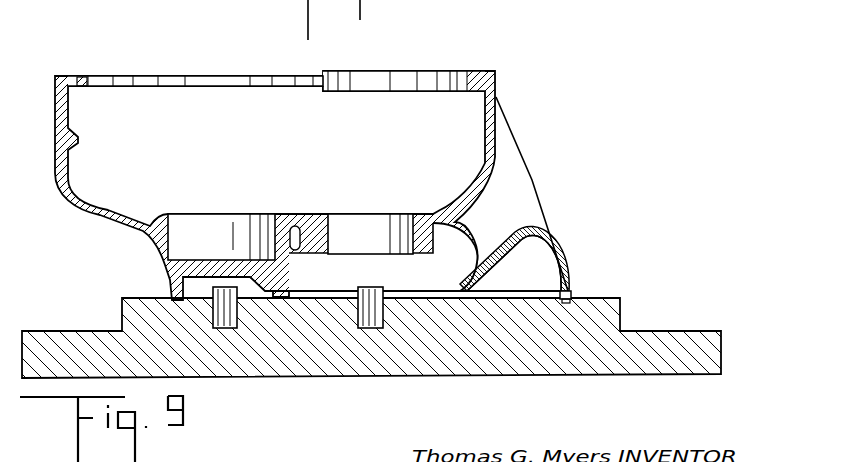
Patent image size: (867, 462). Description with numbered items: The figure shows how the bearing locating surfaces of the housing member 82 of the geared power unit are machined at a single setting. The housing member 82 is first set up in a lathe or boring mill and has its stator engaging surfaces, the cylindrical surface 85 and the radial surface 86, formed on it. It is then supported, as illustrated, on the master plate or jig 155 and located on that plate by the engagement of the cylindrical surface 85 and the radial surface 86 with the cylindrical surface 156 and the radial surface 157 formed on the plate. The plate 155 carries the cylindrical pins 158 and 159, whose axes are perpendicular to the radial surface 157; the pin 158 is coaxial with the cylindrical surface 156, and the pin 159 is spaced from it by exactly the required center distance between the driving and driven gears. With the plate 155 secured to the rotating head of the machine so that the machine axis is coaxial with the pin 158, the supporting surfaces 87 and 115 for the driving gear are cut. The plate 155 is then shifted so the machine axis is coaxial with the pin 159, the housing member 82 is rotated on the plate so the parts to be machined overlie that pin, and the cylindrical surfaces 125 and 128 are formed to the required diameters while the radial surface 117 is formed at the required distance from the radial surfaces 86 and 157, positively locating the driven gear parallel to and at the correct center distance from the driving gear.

The housing member 82 is at (80, 210).
The cylindrical surface 85 is at (561, 291).
The radial surface 86 is at (560, 296).
The supporting surface 87 is at (329, 234).
The supporting surface 115 is at (470, 73).
The radial surface 117 is at (84, 44).
The cylindrical surface 125 is at (172, 239).
The cylindrical surface 128 is at (87, 77).
The master plate 155 is at (398, 379).
The cylindrical surface 156 is at (572, 293).
The radial surface 157 is at (566, 301).
The cylindrical pin 158 is at (372, 286).
The cylindrical pin 159 is at (238, 327).